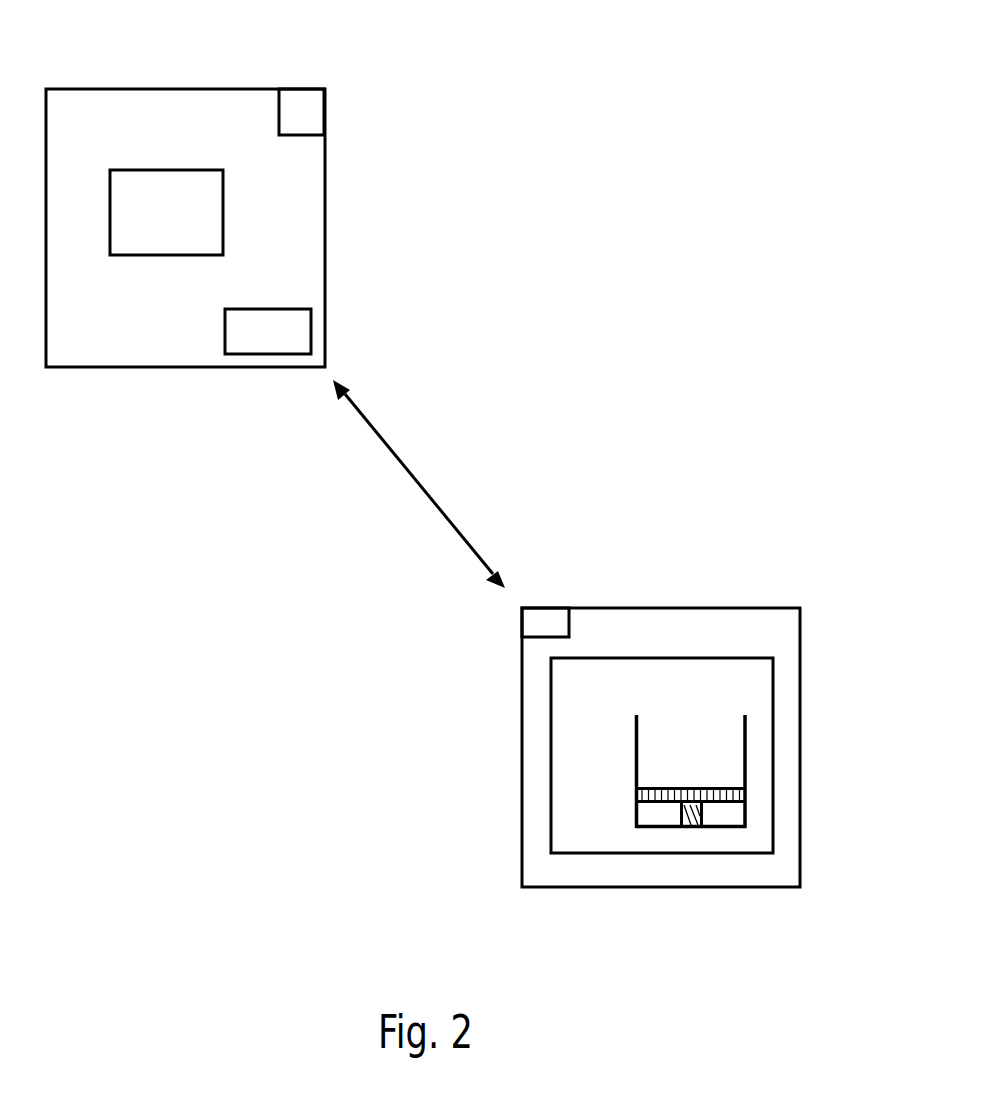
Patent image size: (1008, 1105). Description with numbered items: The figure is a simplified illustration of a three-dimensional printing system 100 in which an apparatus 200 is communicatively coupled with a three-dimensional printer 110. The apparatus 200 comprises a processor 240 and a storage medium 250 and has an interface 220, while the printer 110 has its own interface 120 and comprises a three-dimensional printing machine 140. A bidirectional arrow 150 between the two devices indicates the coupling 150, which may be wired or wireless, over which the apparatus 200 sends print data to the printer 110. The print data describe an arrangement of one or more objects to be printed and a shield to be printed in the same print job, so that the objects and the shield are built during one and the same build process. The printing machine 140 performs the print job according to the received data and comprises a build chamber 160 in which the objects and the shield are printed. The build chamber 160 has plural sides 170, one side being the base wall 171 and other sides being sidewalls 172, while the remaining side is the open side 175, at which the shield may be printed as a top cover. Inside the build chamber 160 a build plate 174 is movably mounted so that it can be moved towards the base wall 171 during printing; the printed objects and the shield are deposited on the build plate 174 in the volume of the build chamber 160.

The 3D printing system 100 is at (760, 82).
The 3D printer 110 is at (660, 607).
The interface of the 3D printer 120 is at (543, 622).
The 3D printing machine 140 is at (662, 657).
The bidirectional arrow / coupling 150 is at (420, 478).
The build chamber 160 is at (748, 722).
The sides 170 is at (719, 807).
The base wall 171 is at (662, 828).
The sidewalls 172 is at (634, 755).
The build plate 174 is at (692, 788).
The open side 175 is at (688, 735).
The apparatus 200 is at (187, 369).
The interface of the apparatus 220 is at (278, 115).
The processor 240 is at (223, 218).
The storage medium 250 is at (225, 332).